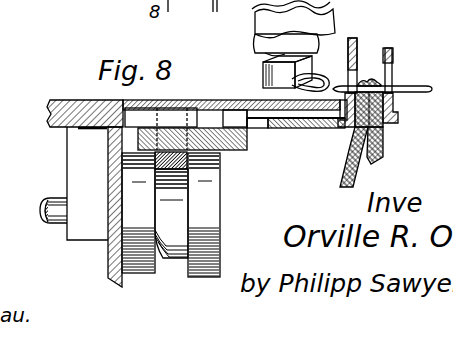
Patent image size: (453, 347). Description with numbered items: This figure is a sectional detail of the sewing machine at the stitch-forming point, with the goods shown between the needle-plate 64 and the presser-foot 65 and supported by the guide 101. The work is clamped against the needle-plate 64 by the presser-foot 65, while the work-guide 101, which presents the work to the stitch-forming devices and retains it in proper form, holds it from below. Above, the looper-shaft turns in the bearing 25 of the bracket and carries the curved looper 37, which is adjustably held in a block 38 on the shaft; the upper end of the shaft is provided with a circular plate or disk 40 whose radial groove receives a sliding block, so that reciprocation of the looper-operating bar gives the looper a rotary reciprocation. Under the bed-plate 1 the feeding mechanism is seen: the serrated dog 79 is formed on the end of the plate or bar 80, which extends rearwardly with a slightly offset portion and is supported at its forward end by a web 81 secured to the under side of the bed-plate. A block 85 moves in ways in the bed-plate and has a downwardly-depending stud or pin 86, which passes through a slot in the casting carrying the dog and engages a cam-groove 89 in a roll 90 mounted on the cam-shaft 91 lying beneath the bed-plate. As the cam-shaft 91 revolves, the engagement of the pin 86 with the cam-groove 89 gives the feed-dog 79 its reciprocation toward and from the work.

The bed-plate 1 is at (86, 100).
The block 85 is at (180, 110).
The stud or pin 86 is at (171, 160).
The plate or bar 80 is at (302, 116).
The web 81 is at (335, 129).
The serrated dog 79 is at (351, 128).
The cam-groove 89 is at (179, 258).
The roll 90 is at (204, 215).
The cam-shaft 91 is at (55, 187).
The circular plate or disk 40 is at (293, 19).
The bearing 25 is at (287, 45).
The block 38 is at (263, 77).
The curved looper 37 is at (316, 71).
The needle-plate 64 is at (357, 46).
The presser-foot 65 is at (400, 70).
The guide 101 is at (369, 161).